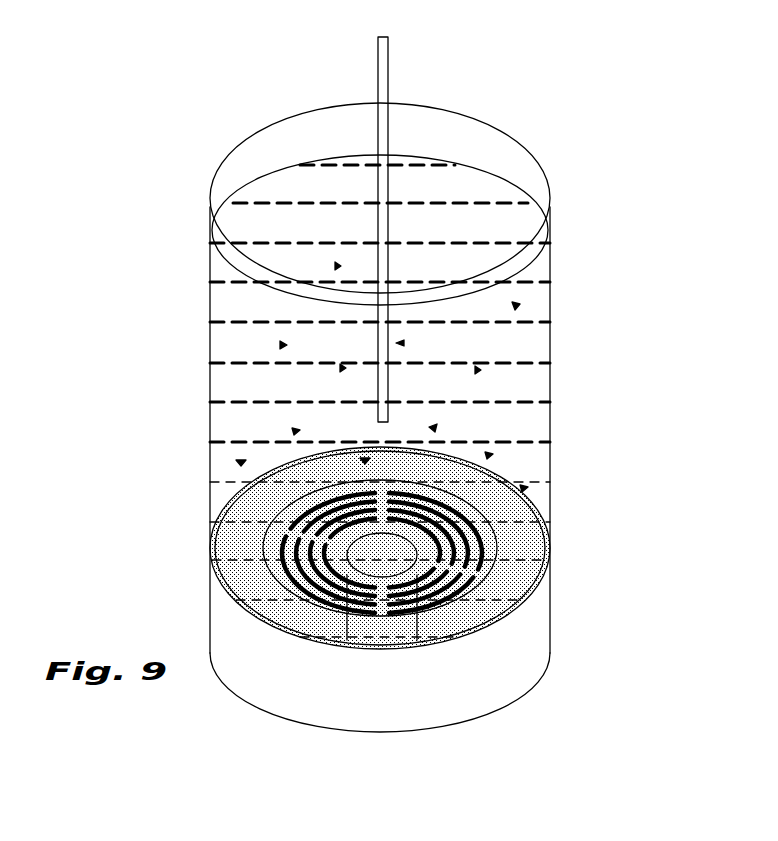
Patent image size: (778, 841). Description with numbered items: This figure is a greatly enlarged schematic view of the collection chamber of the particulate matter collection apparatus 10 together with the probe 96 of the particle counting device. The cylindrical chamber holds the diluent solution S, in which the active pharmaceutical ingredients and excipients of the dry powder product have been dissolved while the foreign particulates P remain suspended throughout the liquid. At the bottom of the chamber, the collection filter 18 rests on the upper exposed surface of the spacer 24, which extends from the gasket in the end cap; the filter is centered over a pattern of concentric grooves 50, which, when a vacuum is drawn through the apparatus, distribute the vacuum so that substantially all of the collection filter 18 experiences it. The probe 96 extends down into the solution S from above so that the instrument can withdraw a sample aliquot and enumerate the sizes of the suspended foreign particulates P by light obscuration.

The particulate matter collection apparatus 10 is at (580, 279).
The collection filter 18 is at (527, 547).
The spacer 24 is at (527, 638).
The concentric grooves 50 is at (487, 547).
The probe 96 is at (382, 70).
The diluent solution S is at (465, 228).
The foreign particulates P is at (277, 345).